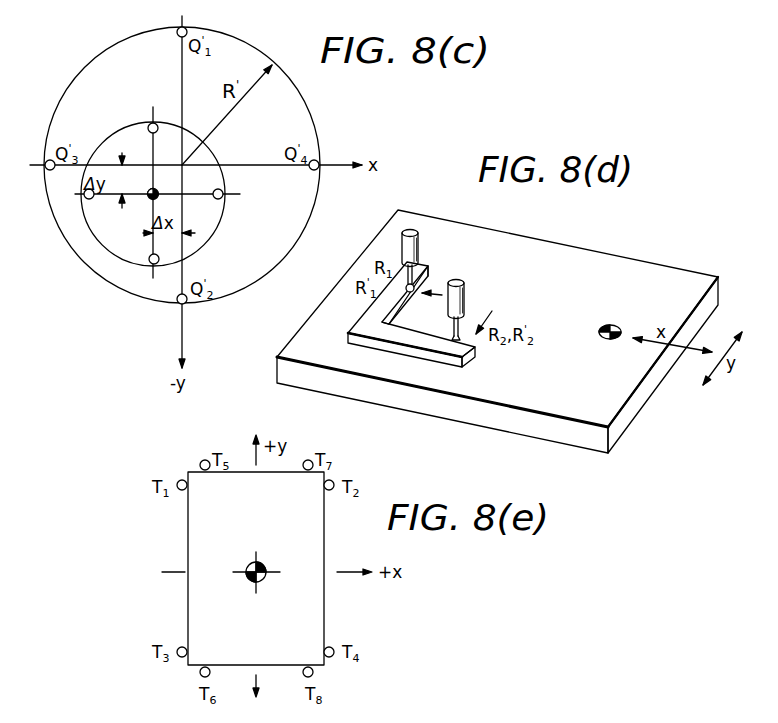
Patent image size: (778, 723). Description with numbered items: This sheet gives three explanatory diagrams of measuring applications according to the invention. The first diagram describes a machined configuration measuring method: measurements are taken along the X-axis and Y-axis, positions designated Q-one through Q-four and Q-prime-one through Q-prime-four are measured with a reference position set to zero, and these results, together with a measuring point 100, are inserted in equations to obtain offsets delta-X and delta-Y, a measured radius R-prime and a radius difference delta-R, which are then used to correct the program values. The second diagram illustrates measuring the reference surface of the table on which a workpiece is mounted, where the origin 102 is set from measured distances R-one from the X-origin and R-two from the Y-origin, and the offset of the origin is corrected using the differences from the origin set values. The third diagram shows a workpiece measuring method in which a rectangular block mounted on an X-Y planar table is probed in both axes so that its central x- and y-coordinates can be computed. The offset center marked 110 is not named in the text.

The measuring point 100 is at (307, 167).
The center of measured circle 110 is at (158, 196).
The origin 102 is at (606, 323).